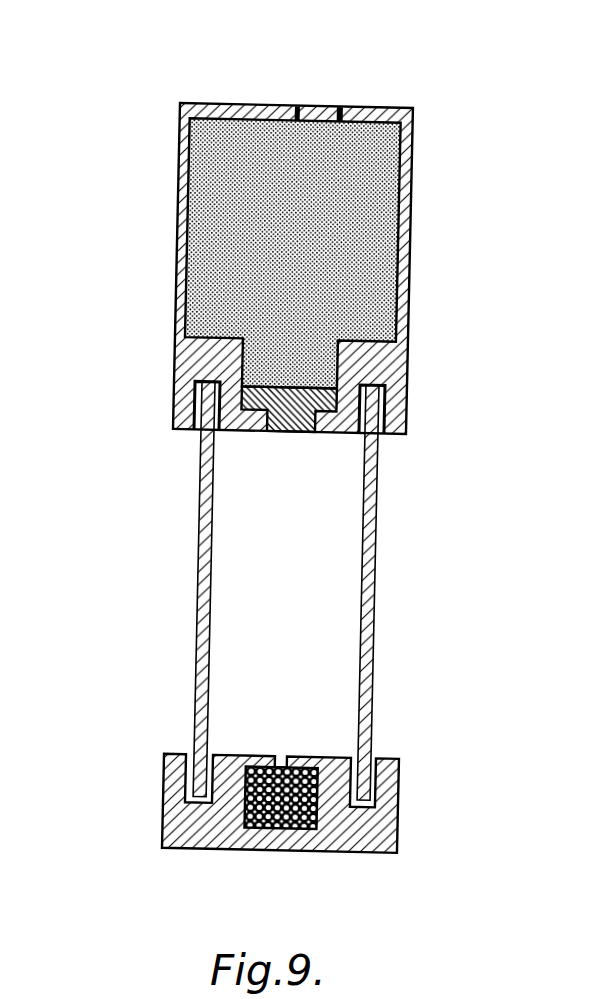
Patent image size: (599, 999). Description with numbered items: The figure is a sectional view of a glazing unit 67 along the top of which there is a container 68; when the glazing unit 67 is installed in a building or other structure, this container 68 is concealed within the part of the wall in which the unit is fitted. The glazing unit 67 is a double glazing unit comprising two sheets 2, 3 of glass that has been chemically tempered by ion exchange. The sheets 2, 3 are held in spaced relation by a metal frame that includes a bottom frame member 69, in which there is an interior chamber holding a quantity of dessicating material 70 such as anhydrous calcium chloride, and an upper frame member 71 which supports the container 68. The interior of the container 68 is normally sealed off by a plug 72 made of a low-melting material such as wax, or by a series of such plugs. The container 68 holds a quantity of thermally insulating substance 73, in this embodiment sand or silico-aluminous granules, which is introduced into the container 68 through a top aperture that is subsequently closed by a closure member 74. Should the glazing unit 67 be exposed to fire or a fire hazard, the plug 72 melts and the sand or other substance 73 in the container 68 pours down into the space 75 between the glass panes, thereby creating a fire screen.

The sheet of glass 2 is at (202, 519).
The sheet of glass 3 is at (378, 535).
The glazing unit 67 is at (289, 473).
The container 68 is at (413, 187).
The bottom frame member 69 is at (400, 813).
The dessicating material 70 is at (297, 823).
The upper frame member 71 is at (368, 372).
The plug 72 is at (300, 433).
The thermally insulating substance 73 is at (323, 272).
The closure member 74 is at (321, 107).
The space 75 is at (278, 673).